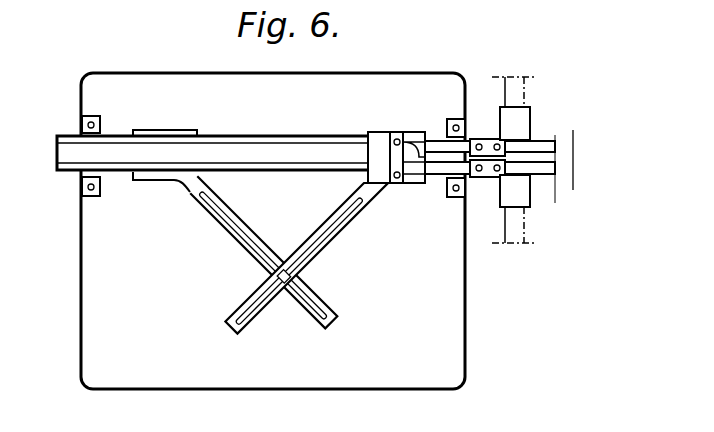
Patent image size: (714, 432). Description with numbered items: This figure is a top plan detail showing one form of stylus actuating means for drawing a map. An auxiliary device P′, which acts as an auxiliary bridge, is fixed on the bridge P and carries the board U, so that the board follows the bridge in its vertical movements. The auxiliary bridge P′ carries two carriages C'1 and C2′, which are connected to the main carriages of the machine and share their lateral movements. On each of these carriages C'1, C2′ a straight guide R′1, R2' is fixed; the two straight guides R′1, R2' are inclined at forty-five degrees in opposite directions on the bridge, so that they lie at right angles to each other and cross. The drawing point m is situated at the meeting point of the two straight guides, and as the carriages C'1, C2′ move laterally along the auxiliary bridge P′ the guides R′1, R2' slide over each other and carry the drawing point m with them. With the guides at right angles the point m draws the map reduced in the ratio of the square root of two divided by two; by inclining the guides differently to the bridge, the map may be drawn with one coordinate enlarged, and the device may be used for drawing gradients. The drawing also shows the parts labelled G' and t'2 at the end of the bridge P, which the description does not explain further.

The board U is at (85, 340).
The auxiliary device P′ is at (287, 156).
The carriage C'1 is at (169, 145).
The carriage C2′ is at (390, 120).
The straight guide R′1 is at (241, 234).
The straight guide R2' is at (306, 252).
The drawing point m is at (283, 280).
The bridge P is at (548, 150).
The gear shaft G' is at (523, 160).
The position mark t'2 is at (584, 160).